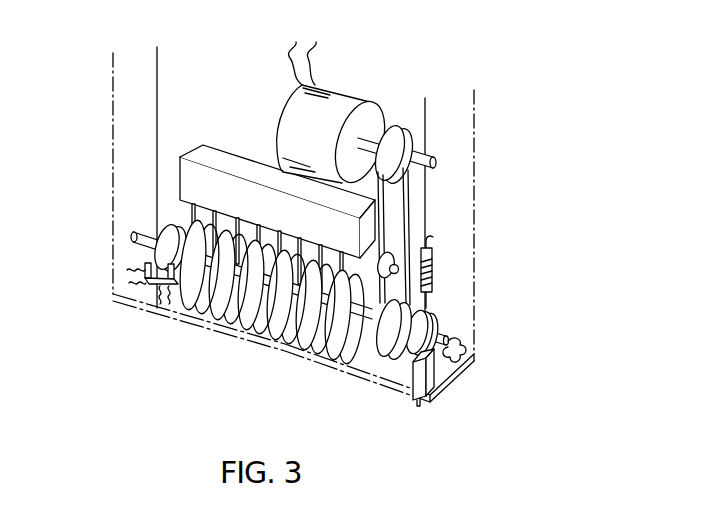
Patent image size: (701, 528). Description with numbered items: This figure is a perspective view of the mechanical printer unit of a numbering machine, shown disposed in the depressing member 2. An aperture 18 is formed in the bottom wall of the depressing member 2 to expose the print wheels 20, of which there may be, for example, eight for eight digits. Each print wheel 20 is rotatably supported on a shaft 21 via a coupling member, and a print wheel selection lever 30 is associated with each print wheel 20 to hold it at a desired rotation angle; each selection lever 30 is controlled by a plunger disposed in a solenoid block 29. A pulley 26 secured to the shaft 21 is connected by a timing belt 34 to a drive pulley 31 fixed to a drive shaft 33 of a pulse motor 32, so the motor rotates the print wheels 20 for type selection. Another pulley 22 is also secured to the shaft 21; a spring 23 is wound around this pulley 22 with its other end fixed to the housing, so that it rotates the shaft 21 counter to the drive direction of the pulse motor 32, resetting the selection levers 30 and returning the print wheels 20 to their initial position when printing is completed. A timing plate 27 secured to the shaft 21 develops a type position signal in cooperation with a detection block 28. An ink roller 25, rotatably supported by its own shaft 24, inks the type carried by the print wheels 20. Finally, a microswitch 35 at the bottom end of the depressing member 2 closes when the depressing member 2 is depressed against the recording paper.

The depressing member 2 is at (462, 67).
The aperture 18 is at (357, 359).
The print wheels 20 is at (188, 294).
The shaft 21 is at (132, 238).
The pulley 22 is at (436, 322).
The spring 23 is at (432, 276).
The shaft 24 is at (398, 268).
The ink roller 25 is at (389, 258).
The pulley 26 is at (390, 348).
The timing plate 27 is at (163, 224).
The detection block 28 is at (153, 277).
The solenoid block 29 is at (198, 156).
The print wheel selection lever 30 is at (186, 211).
The drive pulley 31 is at (395, 126).
The pulse motor 32 is at (355, 98).
The motor shaft 33 is at (435, 160).
The timing belt 34 is at (409, 195).
The microswitch 35 is at (437, 374).